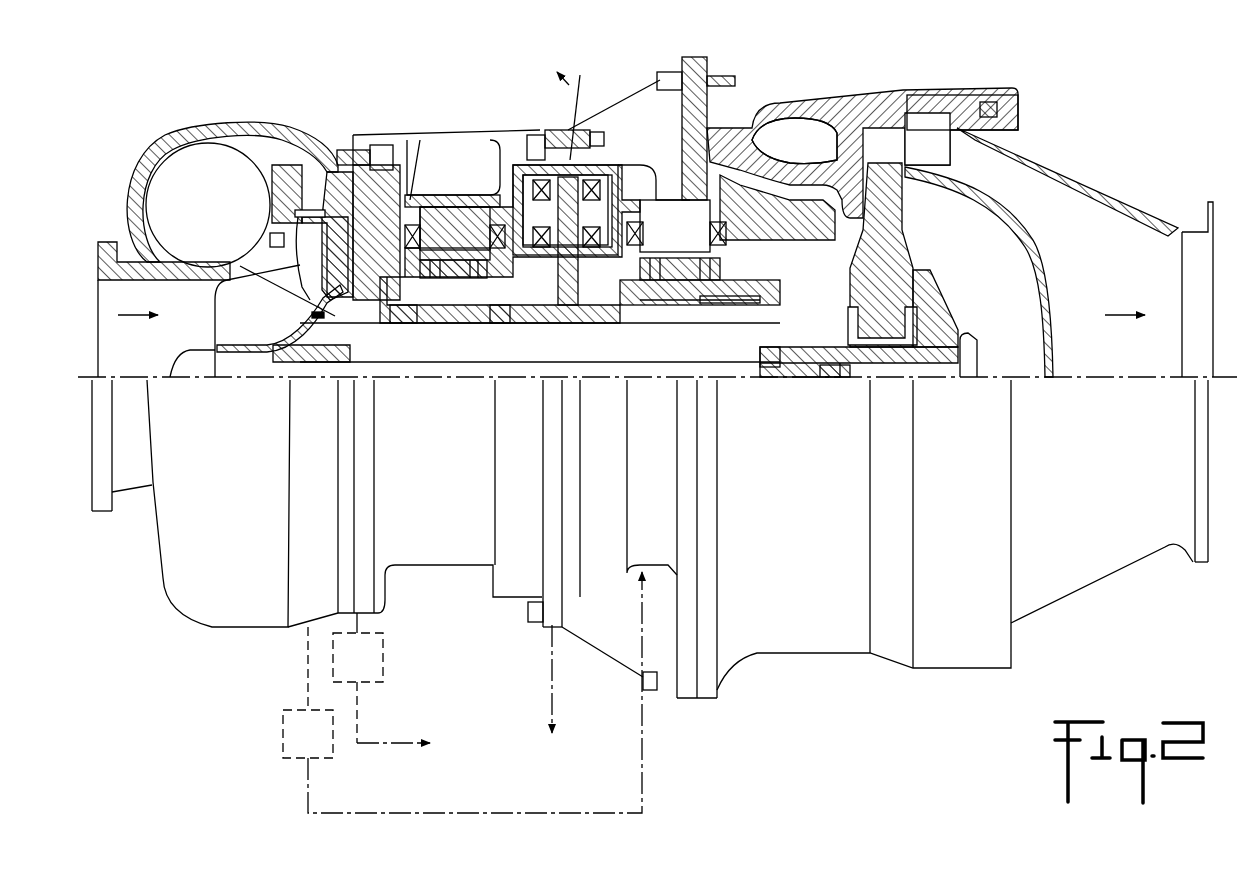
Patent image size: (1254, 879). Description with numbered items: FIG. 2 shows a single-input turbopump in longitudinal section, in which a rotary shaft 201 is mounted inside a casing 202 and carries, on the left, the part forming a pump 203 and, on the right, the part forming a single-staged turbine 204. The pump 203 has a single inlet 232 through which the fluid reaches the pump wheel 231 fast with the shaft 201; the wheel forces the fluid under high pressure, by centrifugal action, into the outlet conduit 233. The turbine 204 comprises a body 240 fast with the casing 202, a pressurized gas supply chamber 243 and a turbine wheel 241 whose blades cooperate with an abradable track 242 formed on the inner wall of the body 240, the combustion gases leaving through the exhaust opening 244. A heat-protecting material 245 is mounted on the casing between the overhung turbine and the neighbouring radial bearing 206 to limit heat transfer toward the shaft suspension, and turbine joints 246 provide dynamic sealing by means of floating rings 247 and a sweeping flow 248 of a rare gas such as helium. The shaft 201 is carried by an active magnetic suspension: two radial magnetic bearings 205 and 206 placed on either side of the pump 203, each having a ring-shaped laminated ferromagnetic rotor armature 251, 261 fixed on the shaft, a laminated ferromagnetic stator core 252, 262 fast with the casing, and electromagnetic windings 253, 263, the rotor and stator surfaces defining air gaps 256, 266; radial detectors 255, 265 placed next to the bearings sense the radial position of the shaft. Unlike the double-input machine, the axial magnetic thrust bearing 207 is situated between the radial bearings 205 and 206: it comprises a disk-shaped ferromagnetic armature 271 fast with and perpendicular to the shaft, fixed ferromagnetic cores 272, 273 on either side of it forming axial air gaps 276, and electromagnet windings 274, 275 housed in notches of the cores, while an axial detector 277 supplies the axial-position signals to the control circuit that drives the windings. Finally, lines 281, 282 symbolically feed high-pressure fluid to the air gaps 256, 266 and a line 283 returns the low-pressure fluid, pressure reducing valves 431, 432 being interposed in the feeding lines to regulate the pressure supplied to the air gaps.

The rotary shaft 201 is at (958, 305).
The casing 202 is at (232, 637).
The pump 203 is at (183, 130).
The turbine 204 is at (795, 655).
The radial magnetic bearing 205 is at (462, 190).
The radial magnetic bearing 206 is at (632, 365).
The axial magnetic thrust bearing 207 is at (525, 140).
The pump wheel 231 is at (183, 368).
The inlet 232 is at (310, 285).
The outlet conduit 233 is at (150, 240).
The turbine body 240 is at (812, 103).
The turbine wheel 241 is at (905, 242).
The abradable track 242 is at (905, 100).
The pressurized gas supply chamber 243 is at (794, 141).
The exhaust opening 244 is at (1150, 220).
The heat-protecting material 245 is at (730, 170).
The turbine joints 246 is at (835, 378).
The floating rings 247 is at (772, 370).
The sweeping flow 248 is at (579, 97).
The rotor armature 251 is at (470, 282).
The stator core 252 is at (455, 228).
The electromagnetic windings 253 is at (425, 150).
The radial detector 255 is at (395, 165).
The air gap 256 is at (440, 280).
The rotor armature 261 is at (675, 283).
The stator core 262 is at (675, 226).
The electromagnetic windings 263 is at (676, 238).
The radial detector 265 is at (765, 305).
The air gap 266 is at (650, 290).
The ferromagnetic armature 271 is at (654, 181).
The fixed ferromagnetic core 272 is at (548, 260).
The fixed ferromagnetic core 273 is at (575, 295).
The electromagnet winding 274 is at (522, 160).
The electromagnet winding 275 is at (620, 160).
The axial air gaps 276 is at (568, 160).
The axial detector 277 is at (286, 323).
The feeding line 281 is at (360, 740).
The feeding line 282 is at (306, 793).
The return line 283 is at (550, 680).
The pressure reducing valve 431 is at (385, 650).
The pressure reducing valve 432 is at (283, 735).